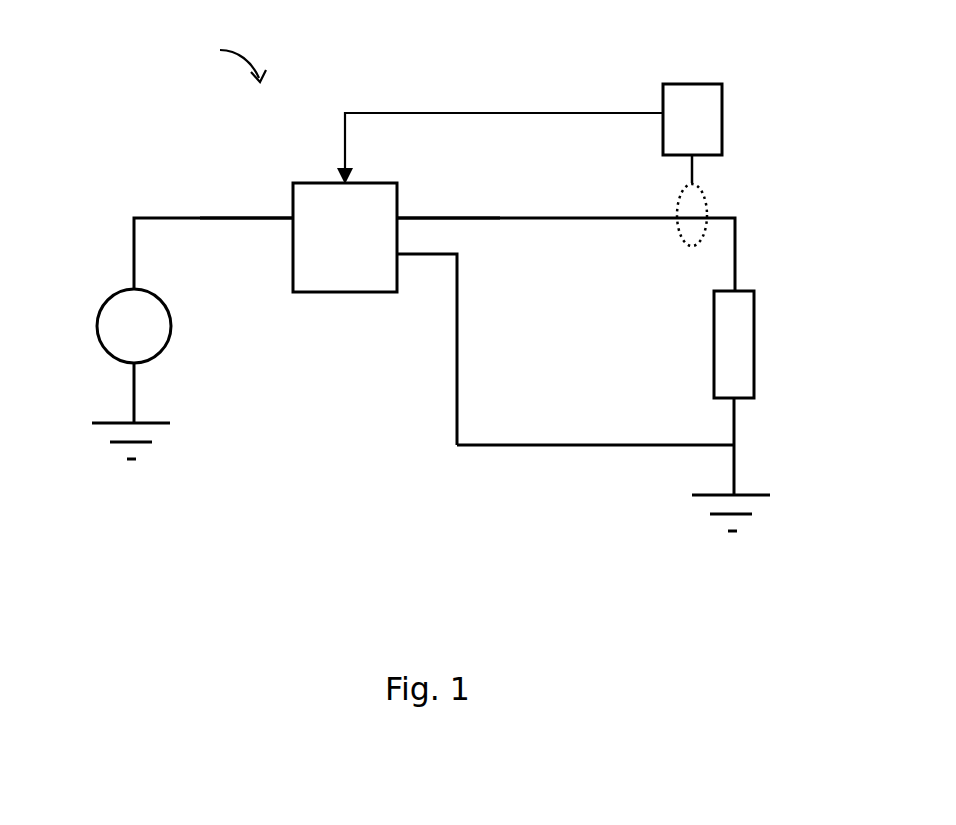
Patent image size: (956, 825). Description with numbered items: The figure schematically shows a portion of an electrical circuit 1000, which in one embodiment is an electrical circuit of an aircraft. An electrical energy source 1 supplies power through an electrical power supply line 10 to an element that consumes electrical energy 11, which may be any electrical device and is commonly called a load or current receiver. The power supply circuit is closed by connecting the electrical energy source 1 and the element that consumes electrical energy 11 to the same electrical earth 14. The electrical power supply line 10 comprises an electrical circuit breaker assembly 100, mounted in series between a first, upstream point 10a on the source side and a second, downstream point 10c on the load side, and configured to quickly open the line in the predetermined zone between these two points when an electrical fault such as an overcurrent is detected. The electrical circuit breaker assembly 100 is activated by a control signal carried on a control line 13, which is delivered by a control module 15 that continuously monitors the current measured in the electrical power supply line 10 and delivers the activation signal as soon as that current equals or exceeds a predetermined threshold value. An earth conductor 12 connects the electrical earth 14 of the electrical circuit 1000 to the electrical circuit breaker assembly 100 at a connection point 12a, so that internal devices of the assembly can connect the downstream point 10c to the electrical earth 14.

The electrical circuit 1000 is at (213, 58).
The electrical energy source 1 is at (113, 313).
The electrical power supply line 10 is at (157, 218).
The first point (upstream point) 10a is at (240, 218).
The second point (downstream point) 10c is at (417, 218).
The electrical circuit breaker assembly 100 is at (358, 292).
The control line 13 is at (515, 113).
The control module 15 is at (722, 135).
The element that consumes electrical energy 11 is at (754, 332).
The connection point 12a is at (457, 330).
The earth conductor 12 is at (532, 445).
The electrical earth 14 is at (157, 423).